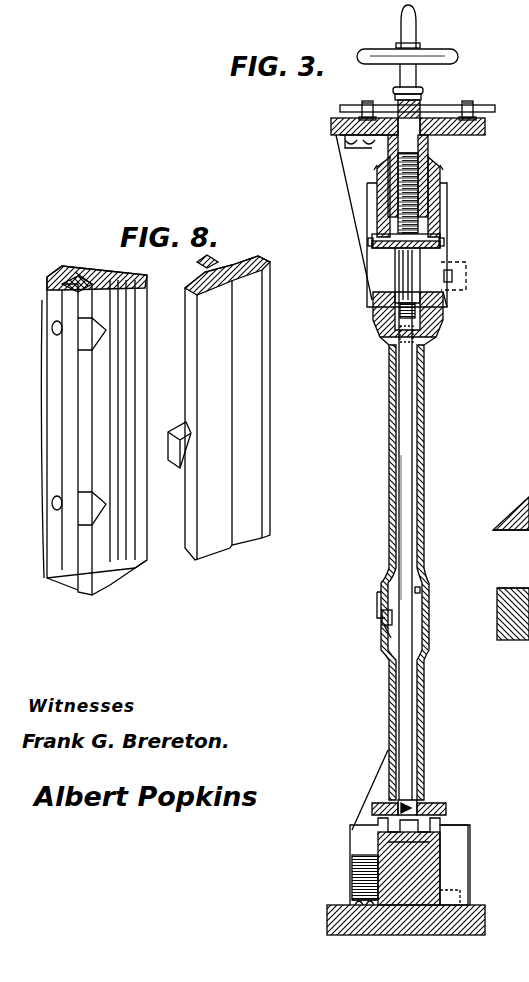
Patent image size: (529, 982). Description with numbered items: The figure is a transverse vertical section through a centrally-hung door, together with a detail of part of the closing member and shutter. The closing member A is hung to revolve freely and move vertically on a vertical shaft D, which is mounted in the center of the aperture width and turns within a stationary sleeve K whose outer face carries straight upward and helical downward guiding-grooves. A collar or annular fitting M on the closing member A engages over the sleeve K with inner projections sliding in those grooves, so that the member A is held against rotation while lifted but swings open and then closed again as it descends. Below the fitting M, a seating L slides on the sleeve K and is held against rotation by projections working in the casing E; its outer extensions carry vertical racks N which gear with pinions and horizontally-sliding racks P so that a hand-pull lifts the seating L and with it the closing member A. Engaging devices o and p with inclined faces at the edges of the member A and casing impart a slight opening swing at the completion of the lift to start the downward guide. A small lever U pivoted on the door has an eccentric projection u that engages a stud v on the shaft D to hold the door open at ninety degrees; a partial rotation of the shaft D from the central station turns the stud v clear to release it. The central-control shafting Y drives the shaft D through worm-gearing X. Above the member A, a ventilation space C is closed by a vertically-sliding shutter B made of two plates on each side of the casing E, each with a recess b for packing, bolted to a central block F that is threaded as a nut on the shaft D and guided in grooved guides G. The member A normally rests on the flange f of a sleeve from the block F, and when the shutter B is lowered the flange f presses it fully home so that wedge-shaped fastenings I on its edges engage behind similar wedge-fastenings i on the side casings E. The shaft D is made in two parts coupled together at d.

In FIG. 3, the hand wheel H is at (445, 60).
In FIG. 3, the vertical shaft D is at (434, 718).
In FIG. 3, the worm-gearing X is at (365, 87).
In FIG. 3, the bar end Z is at (469, 87).
In FIG. 3, the central-control shafting Y is at (429, 107).
In FIG. 3, the casing E is at (312, 932).
In FIG. 3, the recess b is at (372, 183).
In FIG. 3, the vertically-sliding shutter B is at (404, 197).
In FIG. 3, the central block F is at (424, 196).
In FIG. 3, the grooved guides G is at (409, 264).
In FIG. 3, the space C is at (464, 276).
In FIG. 3, the engaging device o is at (450, 284).
In FIG. 3, the flange f is at (389, 311).
In FIG. 3, the engaging device p is at (447, 322).
In FIG. 3, the coupling d is at (390, 336).
In FIG. 3, the closing member A is at (424, 420).
In FIG. 8, the closing member A is at (227, 407).
In FIG. 3, the lever U is at (378, 600).
In FIG. 3, the eccentric projection u is at (383, 620).
In FIG. 3, the stud v is at (421, 589).
In FIG. 3, the annular fitting M is at (372, 808).
In FIG. 3, the stationary sleeve K is at (446, 808).
In FIG. 3, the seating L is at (398, 840).
In FIG. 3, the vertical racks N is at (352, 878).
In FIG. 3, the horizontally-sliding racks P is at (455, 900).
In FIG. 8, the wedge-fastenings i is at (98, 336).
In FIG. 8, the wedge-shaped fastenings I is at (178, 436).